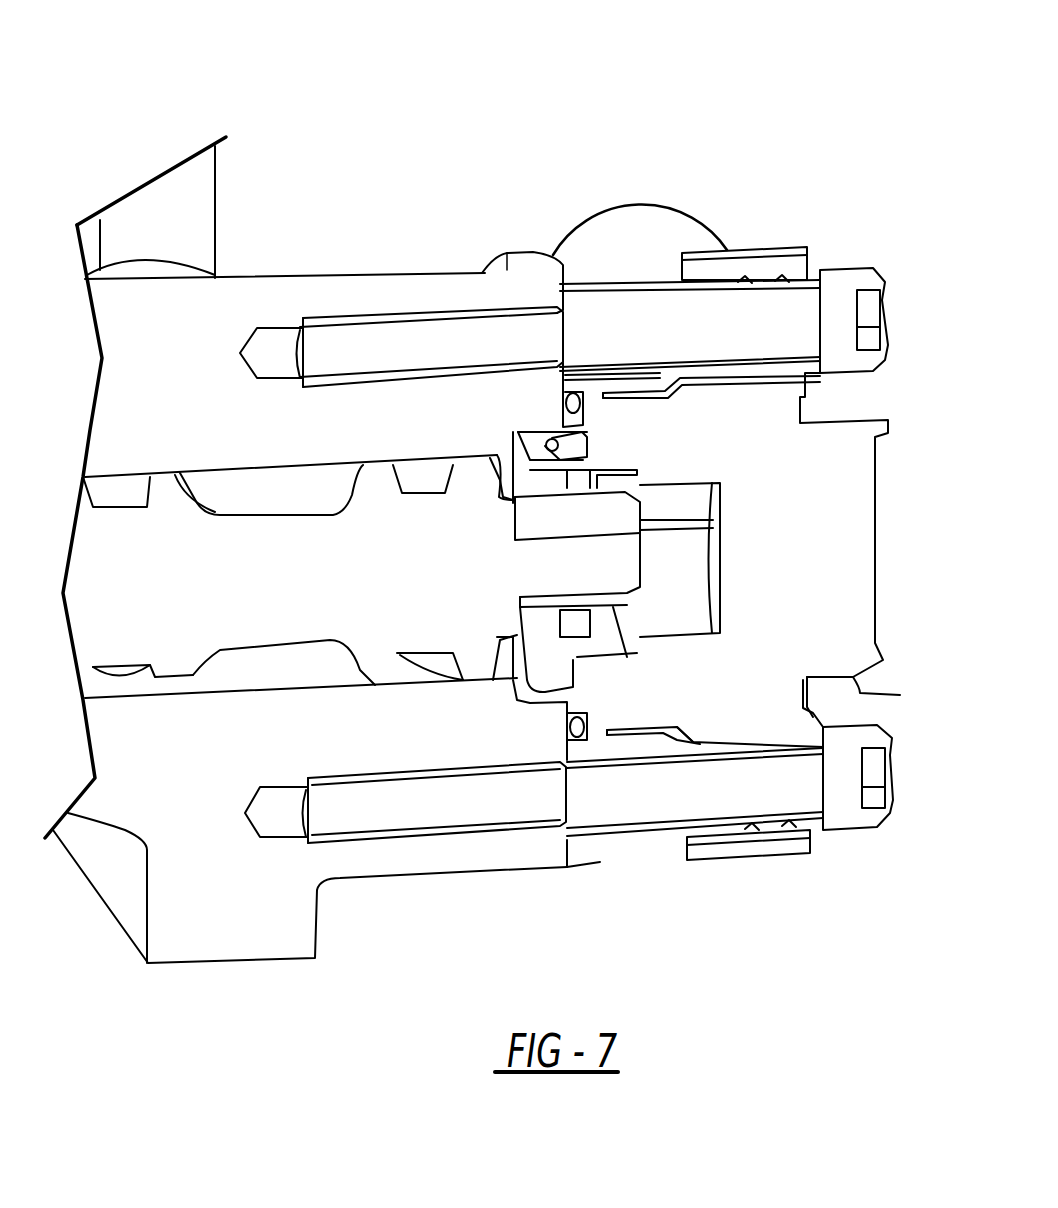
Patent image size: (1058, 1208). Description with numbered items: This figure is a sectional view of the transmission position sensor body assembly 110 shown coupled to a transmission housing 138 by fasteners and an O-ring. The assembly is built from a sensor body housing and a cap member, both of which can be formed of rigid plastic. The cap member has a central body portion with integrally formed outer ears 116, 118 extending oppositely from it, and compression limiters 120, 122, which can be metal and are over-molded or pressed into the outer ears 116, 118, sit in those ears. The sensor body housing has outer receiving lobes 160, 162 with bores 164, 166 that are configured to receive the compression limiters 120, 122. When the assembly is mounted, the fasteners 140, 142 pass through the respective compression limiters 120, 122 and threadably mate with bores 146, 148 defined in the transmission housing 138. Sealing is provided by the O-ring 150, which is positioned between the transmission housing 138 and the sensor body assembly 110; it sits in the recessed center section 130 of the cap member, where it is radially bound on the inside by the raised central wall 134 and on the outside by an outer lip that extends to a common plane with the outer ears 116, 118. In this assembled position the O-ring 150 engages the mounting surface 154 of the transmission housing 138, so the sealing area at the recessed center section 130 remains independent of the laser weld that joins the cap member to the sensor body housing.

The transmission position sensor body assembly 110 is at (796, 90).
The outer ear 116 is at (640, 280).
The outer ear 118 is at (610, 847).
The compression limiter 120 is at (772, 280).
The compression limiter 122 is at (773, 828).
The recessed center section 130 is at (567, 712).
The raised central wall 134 is at (862, 690).
The transmission housing 138 is at (243, 297).
The fastener 140 is at (800, 327).
The fastener 142 is at (808, 785).
The bore 146 is at (400, 327).
The bore 148 is at (438, 822).
The O-ring 150 is at (572, 403).
The mounting surface 154 is at (596, 282).
The outer receiving lobe 160 is at (737, 265).
The outer receiving lobe 162 is at (723, 848).
The bore 164 is at (722, 250).
The bore 166 is at (717, 833).